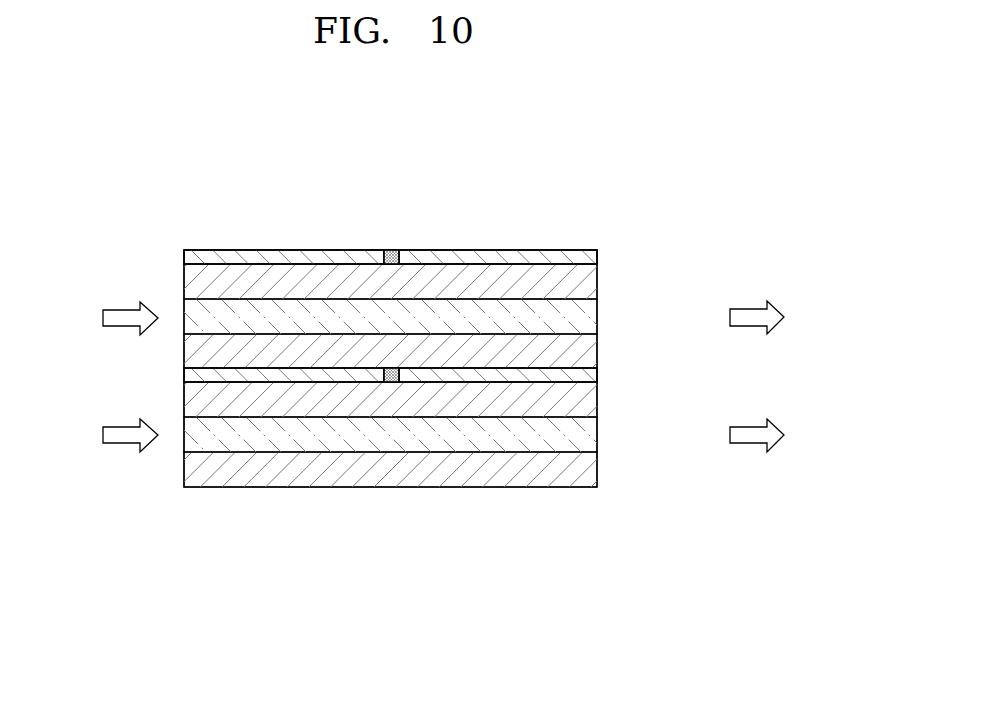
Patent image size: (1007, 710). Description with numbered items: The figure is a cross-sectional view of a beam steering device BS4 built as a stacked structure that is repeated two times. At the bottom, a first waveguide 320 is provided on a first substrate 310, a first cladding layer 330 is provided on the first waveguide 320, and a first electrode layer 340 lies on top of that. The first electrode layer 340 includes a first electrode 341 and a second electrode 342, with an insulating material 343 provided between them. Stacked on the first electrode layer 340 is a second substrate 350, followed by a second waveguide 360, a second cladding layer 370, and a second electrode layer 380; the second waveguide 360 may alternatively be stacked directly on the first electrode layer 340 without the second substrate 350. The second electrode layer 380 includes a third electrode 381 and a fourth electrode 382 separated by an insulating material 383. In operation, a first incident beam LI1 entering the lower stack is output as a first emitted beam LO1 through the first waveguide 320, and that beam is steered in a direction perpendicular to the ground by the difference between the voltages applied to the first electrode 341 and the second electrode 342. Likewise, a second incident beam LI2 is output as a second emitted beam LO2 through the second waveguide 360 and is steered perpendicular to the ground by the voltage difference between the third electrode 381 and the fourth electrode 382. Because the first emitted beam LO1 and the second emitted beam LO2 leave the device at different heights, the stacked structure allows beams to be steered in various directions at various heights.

The first substrate 310 is at (597, 469).
The first waveguide 320 is at (597, 434).
The first cladding layer 330 is at (597, 399).
The first electrode layer 340 is at (597, 376).
The first electrode 341 is at (283, 382).
The second electrode 342 is at (498, 382).
The insulating material 343 is at (391, 382).
The second substrate 350 is at (597, 351).
The second waveguide 360 is at (597, 316).
The second cladding layer 370 is at (597, 282).
The second electrode layer 380 is at (597, 257).
The third electrode 381 is at (283, 250).
The fourth electrode 382 is at (498, 250).
The insulating material 383 is at (391, 250).
The beam steering device BS4 is at (600, 210).
The first incident beam LI1 is at (109, 435).
The second incident beam LI2 is at (109, 318).
The first emitted beam LO1 is at (781, 435).
The second emitted beam LO2 is at (781, 317).